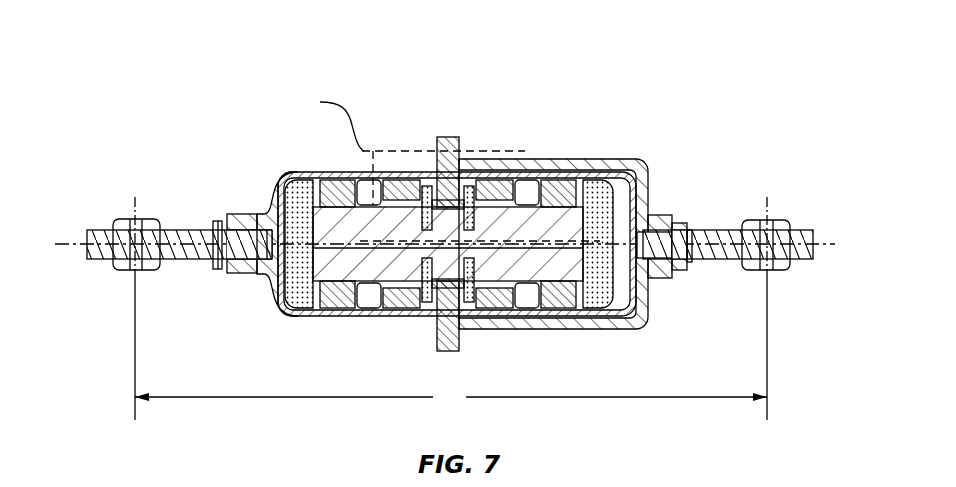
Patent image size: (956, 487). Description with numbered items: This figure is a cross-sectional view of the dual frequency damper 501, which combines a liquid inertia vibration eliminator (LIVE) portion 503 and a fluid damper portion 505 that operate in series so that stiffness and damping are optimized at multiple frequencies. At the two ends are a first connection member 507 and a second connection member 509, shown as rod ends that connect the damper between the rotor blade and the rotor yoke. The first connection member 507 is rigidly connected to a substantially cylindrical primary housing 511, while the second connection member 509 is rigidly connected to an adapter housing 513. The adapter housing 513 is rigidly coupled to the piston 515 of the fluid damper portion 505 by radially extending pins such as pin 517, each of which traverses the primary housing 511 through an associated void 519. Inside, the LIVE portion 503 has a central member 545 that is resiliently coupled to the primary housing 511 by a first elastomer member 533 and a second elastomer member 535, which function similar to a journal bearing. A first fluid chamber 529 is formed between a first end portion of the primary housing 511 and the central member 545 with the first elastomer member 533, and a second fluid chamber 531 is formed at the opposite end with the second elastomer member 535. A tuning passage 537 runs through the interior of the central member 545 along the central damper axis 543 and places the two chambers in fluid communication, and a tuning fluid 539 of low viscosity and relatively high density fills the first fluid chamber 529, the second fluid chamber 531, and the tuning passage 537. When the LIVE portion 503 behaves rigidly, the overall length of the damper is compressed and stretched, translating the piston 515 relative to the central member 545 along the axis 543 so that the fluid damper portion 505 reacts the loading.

The dual frequency damper 501 is at (345, 84).
The liquid inertia vibration eliminator (LIVE) portion 503 is at (320, 328).
The fluid damper portion 505 is at (491, 140).
The first connection member 507 is at (93, 228).
The second connection member 509 is at (750, 220).
The primary housing 511 is at (250, 212).
The adapter housing 513 is at (573, 160).
The piston 515 is at (500, 178).
The pin 517 is at (447, 137).
The void 519 is at (381, 230).
The first fluid chamber 529 is at (284, 317).
The second fluid chamber 531 is at (600, 300).
The first elastomer member 533 is at (350, 300).
The second elastomer member 535 is at (560, 295).
The tuning passage 537 is at (300, 185).
The tuning fluid 539 is at (643, 172).
The central damper axis 543 is at (709, 248).
The central member 545 is at (290, 262).